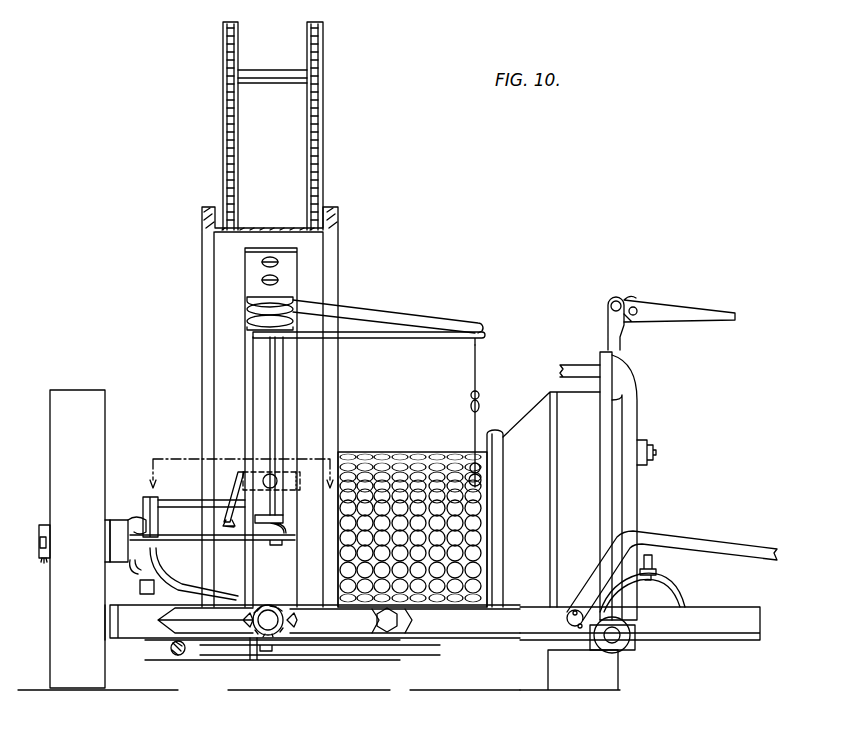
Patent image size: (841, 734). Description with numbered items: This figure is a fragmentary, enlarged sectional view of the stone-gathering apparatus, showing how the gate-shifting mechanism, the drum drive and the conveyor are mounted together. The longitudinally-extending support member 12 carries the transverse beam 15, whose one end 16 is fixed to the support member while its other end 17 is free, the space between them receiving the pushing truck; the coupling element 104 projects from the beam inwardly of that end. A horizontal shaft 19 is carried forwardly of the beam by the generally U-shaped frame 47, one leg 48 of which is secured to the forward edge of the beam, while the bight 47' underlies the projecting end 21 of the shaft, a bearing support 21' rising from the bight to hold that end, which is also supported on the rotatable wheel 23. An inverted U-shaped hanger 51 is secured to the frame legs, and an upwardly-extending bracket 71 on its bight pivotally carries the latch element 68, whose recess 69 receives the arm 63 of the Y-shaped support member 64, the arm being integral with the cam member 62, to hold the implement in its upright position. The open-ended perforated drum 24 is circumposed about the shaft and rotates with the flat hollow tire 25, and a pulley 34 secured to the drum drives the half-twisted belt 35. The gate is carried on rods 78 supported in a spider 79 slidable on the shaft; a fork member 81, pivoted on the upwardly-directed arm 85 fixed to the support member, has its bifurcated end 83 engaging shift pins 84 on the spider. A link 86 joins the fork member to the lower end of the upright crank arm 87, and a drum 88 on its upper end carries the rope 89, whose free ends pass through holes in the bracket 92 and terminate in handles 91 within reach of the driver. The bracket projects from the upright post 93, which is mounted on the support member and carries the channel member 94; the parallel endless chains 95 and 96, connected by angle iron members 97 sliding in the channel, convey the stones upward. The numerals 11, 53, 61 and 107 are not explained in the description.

The section line 11- 11 is at (231, 480).
The support member 12 is at (283, 624).
The beam 15 is at (703, 642).
The one end of the beam 16 is at (270, 660).
The other end of the beam 17 is at (755, 640).
The shaft 19 is at (195, 548).
The projecting end of the shaft 21 is at (32, 531).
The bearing support 21' is at (53, 616).
The rotatable wheel 23 is at (100, 406).
The perforated drum 24 is at (376, 450).
The flat hollow open-ended tire 25 is at (557, 388).
The pulley 34 is at (510, 447).
The belt 35 is at (496, 430).
The U-shaped frame 47 is at (312, 638).
The bight of the frame 47' is at (84, 656).
The leg of the frame 48 is at (720, 605).
The inverted U-shaped hanger 51 is at (618, 495).
The bolt 53 is at (637, 512).
The valve fitting 61 is at (656, 564).
The cam member 62 is at (686, 592).
The arm of the Y-shaped support member 63 is at (680, 537).
The Y-shaped support member 64 is at (752, 548).
The latch element 68 is at (696, 302).
The recess 69 is at (637, 306).
The bracket 71 is at (607, 324).
The rods 78 is at (182, 498).
The spider 79 is at (143, 498).
The fork member 81 is at (158, 530).
The bifurcated end 83 is at (124, 508).
The shift pins 84 is at (132, 576).
The upwardly-directed arm 85 is at (216, 600).
The link 86 is at (260, 542).
The crank arm 87 is at (266, 440).
The drum 88 is at (247, 301).
The rope 89 is at (400, 307).
The handles 91 is at (474, 406).
The bracket 92 is at (418, 342).
The upright post 93 is at (292, 394).
The channel member 94 is at (318, 242).
The endless chain 95 is at (242, 168).
The endless chain 96 is at (318, 137).
The angle iron members 97 is at (262, 80).
The coupling element 104 is at (589, 658).
The wheel hub 107 is at (620, 650).